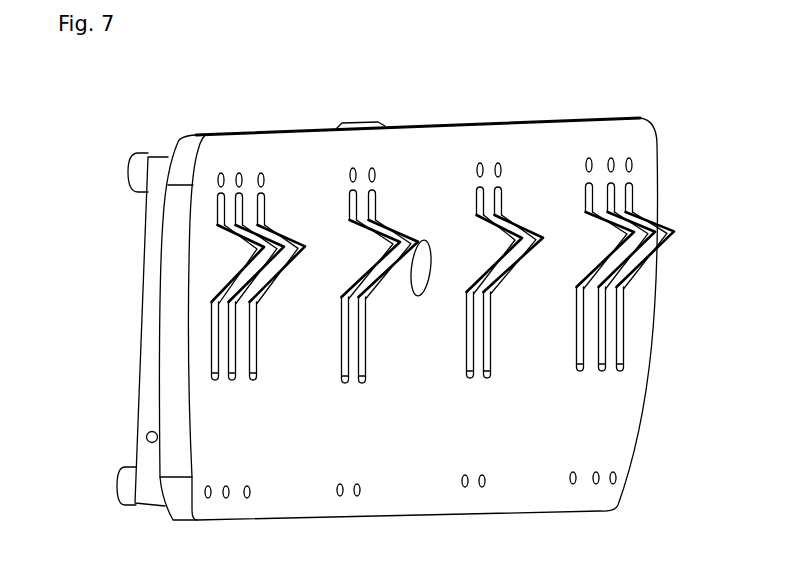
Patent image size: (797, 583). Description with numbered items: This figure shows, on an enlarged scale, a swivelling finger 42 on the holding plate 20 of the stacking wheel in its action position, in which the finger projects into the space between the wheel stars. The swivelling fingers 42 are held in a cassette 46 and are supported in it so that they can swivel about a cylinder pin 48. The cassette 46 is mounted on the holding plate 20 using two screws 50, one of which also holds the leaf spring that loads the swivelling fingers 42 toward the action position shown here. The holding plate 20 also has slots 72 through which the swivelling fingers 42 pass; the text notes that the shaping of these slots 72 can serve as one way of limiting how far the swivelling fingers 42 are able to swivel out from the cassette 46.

The holding plate 20 is at (295, 129).
The swivelling finger 42 is at (243, 252).
The cassette 46 is at (147, 230).
The cylinder pin 48 is at (147, 435).
The screw 50 is at (133, 158).
The slot 72 is at (209, 348).